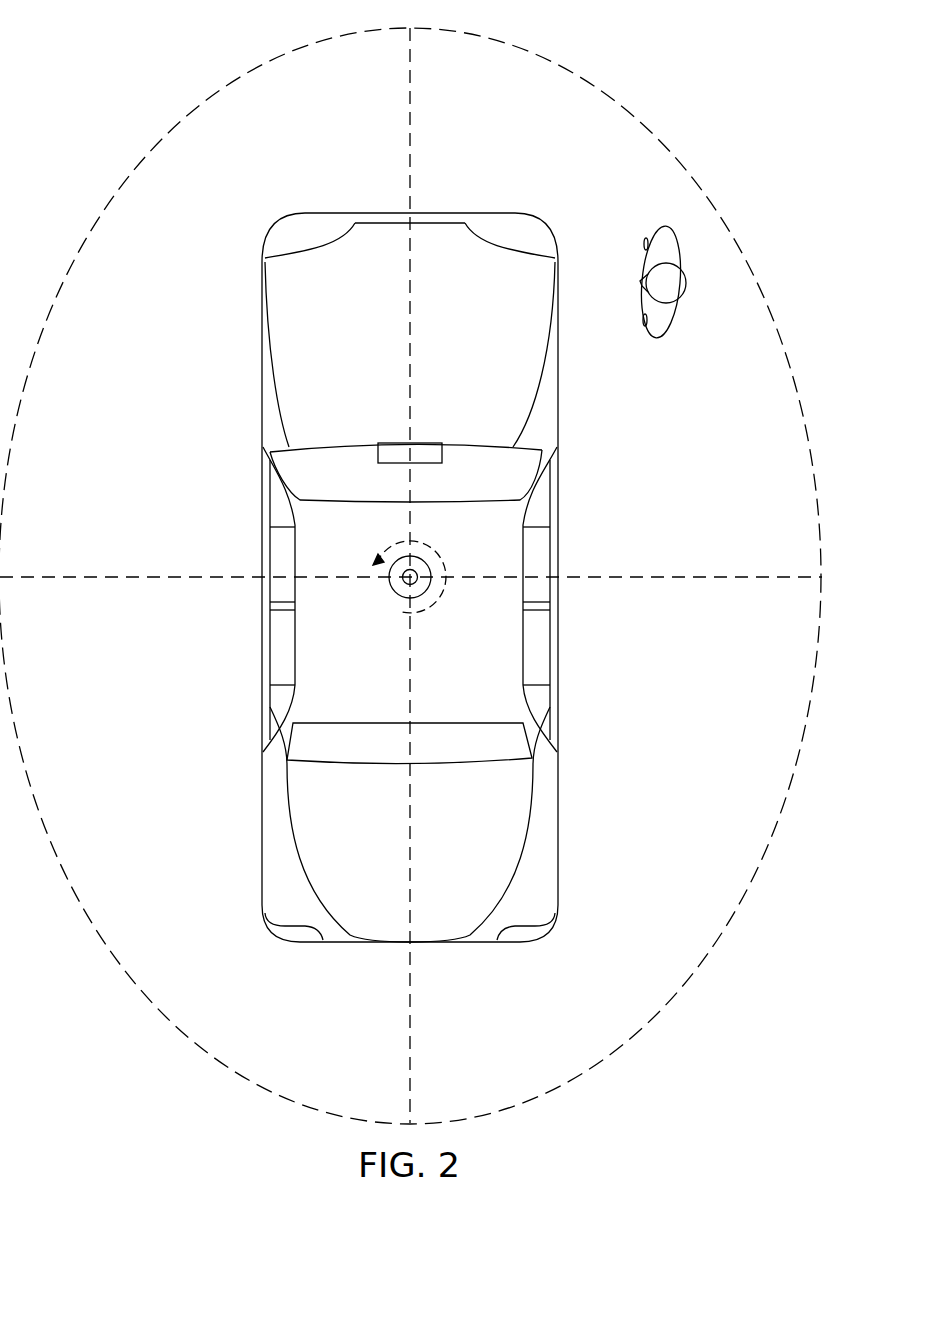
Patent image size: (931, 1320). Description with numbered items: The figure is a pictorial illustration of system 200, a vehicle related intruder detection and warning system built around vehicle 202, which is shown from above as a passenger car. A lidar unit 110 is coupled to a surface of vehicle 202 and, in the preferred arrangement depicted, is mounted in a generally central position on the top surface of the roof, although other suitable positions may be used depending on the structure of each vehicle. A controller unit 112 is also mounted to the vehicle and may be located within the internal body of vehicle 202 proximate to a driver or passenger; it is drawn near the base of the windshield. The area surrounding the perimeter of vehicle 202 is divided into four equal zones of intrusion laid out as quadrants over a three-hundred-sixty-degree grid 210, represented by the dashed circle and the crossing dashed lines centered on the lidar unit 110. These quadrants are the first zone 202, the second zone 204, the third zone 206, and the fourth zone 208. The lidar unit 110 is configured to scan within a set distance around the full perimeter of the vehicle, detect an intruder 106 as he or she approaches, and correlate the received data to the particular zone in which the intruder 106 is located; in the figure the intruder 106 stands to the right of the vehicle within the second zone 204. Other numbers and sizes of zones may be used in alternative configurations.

The system 200 is at (130, 62).
The vehicle 202 is at (318, 170).
The Zone 2 204 is at (544, 170).
The Zone 3 206 is at (318, 1048).
The Zone 4 208 is at (544, 1048).
The grid 210 is at (667, 576).
The controller unit 112 is at (393, 448).
The lidar unit 110 is at (395, 592).
The intruder 106 is at (666, 340).